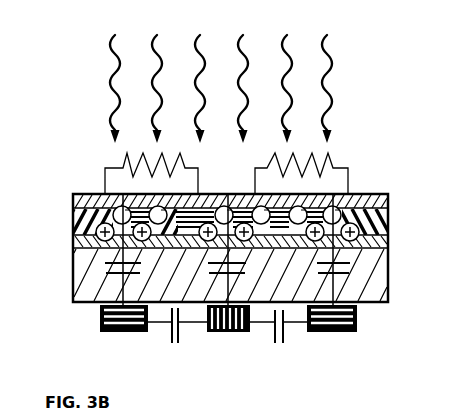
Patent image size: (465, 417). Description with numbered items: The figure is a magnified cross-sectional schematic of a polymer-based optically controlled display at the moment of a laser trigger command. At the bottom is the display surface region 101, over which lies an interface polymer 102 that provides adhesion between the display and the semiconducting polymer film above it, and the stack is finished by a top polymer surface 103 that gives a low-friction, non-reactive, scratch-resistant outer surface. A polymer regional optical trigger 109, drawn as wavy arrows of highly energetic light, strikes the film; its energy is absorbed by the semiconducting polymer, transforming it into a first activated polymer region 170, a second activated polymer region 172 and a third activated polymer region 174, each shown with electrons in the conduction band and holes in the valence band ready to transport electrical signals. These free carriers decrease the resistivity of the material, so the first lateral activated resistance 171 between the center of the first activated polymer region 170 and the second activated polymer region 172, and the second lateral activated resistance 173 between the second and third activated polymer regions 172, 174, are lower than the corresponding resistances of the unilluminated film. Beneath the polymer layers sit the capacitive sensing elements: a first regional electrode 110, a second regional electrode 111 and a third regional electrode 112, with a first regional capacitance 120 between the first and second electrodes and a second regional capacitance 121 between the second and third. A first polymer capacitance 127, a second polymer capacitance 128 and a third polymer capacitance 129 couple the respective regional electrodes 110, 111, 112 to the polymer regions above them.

The display surface region 101 is at (78, 272).
The interface polymer 102 is at (78, 241).
The top polymer surface 103 is at (78, 200).
The polymer regional optical trigger 109 is at (117, 102).
The first regional electrode 110 is at (113, 325).
The second regional electrode 111 is at (217, 323).
The third regional electrode 112 is at (330, 327).
The first regional capacitance 120 is at (170, 327).
The second regional capacitance 121 is at (278, 325).
The first polymer capacitance 127 is at (113, 268).
The second polymer capacitance 128 is at (223, 268).
The third polymer capacitance 129 is at (338, 268).
The first activated polymer region 170 is at (209, 202).
The first lateral activated resistance 171 is at (125, 166).
The second activated polymer region 172 is at (243, 213).
The second lateral activated resistance 173 is at (331, 164).
The third activated polymer region 174 is at (358, 212).